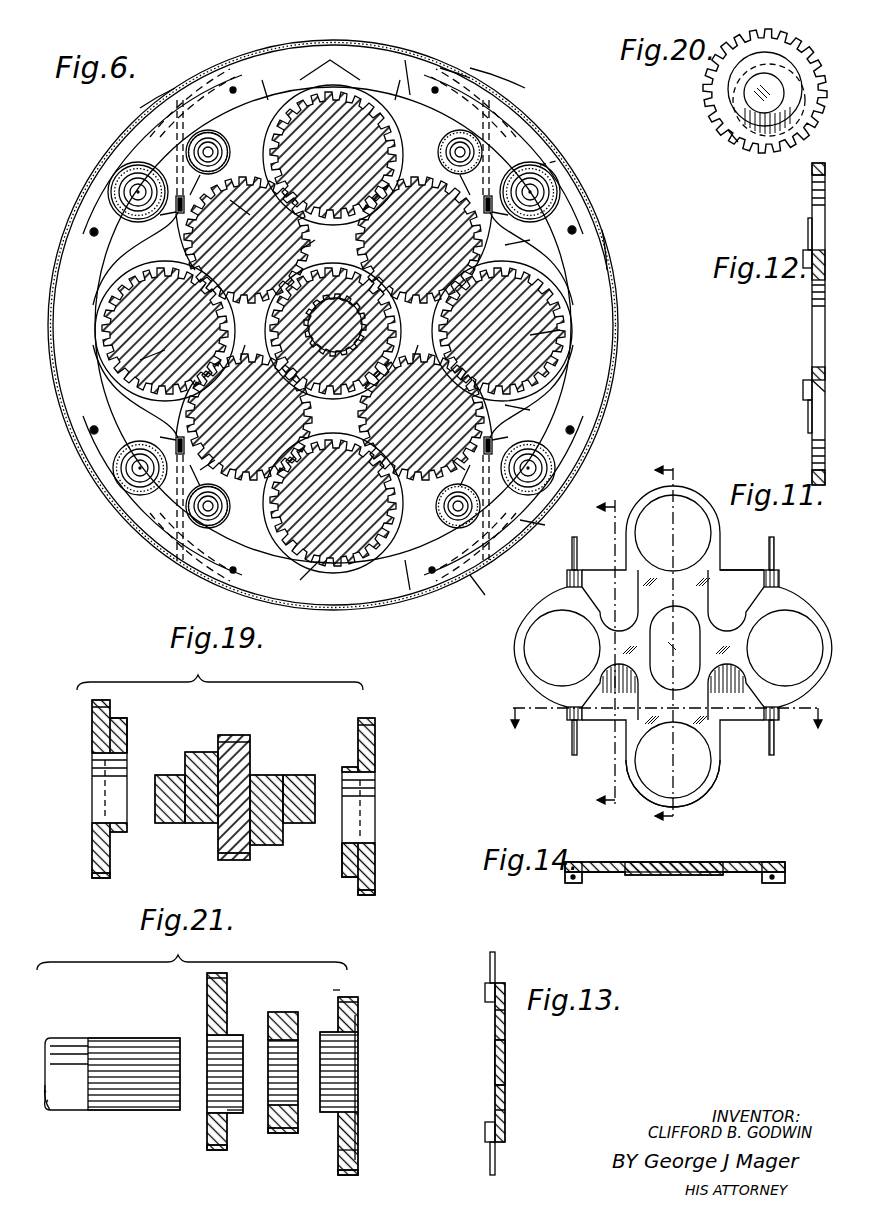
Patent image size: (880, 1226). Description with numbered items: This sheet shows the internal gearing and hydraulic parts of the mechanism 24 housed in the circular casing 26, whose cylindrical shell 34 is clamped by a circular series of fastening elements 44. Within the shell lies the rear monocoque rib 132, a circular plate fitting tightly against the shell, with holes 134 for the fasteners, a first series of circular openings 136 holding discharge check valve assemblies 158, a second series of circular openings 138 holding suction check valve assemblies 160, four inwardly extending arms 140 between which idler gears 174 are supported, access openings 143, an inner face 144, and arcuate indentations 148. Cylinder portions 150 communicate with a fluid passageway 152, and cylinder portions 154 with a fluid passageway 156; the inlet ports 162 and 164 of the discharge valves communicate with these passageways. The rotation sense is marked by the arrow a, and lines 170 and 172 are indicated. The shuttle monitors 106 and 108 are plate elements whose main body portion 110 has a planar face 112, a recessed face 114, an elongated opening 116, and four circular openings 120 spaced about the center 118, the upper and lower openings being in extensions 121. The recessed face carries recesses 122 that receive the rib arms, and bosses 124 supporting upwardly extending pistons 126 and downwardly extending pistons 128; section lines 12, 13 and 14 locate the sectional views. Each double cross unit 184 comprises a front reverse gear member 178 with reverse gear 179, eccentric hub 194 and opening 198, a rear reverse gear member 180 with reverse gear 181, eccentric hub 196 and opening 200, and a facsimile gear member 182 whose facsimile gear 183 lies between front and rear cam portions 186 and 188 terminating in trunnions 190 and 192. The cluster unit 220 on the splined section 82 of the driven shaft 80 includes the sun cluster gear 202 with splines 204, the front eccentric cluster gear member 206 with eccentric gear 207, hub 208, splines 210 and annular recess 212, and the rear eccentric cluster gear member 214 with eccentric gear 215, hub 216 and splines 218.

In FIG. 6, the mechanism 24 is at (500, 95).
In FIG. 6, the circular casing 26 is at (455, 75).
In FIG. 6, the cylindrical shell 34 is at (600, 250).
In FIG. 6, the fastening elements 44 is at (91, 233).
In FIG. 21, the driven or output shaft 80 is at (58, 1112).
In FIG. 6, the splined section 82 is at (328, 380).
In FIG. 21, the splined section 82 is at (125, 1112).
In FIG. 12, the front shuttle monitor 106 is at (800, 365).
In FIG. 14, the front shuttle monitor 106 is at (668, 890).
In FIG. 13, the front shuttle monitor 106 is at (515, 1048).
In FIG. 6, the rear shuttle monitor 108 is at (120, 470).
In FIG. 6, the main body portion 110 is at (510, 436).
In FIG. 11, the main body portion 110 is at (605, 578).
In FIG. 14, the main body portion 110 is at (676, 862).
In FIG. 13, the main body portion 110 is at (507, 1058).
In FIG. 6, the planar face 112 is at (520, 258).
In FIG. 14, the planar face 112 is at (700, 862).
In FIG. 13, the planar face 112 is at (507, 1080).
In FIG. 12, the recessed face 114 is at (803, 393).
In FIG. 11, the recessed face 114 is at (722, 569).
In FIG. 14, the recessed face 114 is at (658, 875).
In FIG. 13, the recessed face 114 is at (495, 1070).
In FIG. 6, the elongated opening 116 is at (310, 250).
In FIG. 12, the elongated opening 116 is at (815, 303).
In FIG. 11, the elongated opening 116 is at (702, 613).
In FIG. 11, the center 118 is at (683, 650).
In FIG. 12, the circular openings 120 is at (812, 190).
In FIG. 11, the circular openings 120 is at (682, 501).
In FIG. 6, the extensions 121 is at (430, 80).
In FIG. 12, the extensions 121 is at (812, 168).
In FIG. 11, the extensions 121 is at (720, 792).
In FIG. 11, the recesses 122 is at (638, 580).
In FIG. 14, the recesses 122 is at (605, 875).
In FIG. 13, the recesses 122 is at (497, 1018).
In FIG. 12, the bosses 124 is at (803, 258).
In FIG. 11, the bosses 124 is at (566, 580).
In FIG. 14, the bosses 124 is at (570, 890).
In FIG. 13, the bosses 124 is at (486, 992).
In FIG. 6, the upwardly extending pistons 126 is at (172, 225).
In FIG. 12, the upwardly extending pistons 126 is at (808, 225).
In FIG. 11, the upwardly extending pistons 126 is at (572, 564).
In FIG. 13, the upwardly extending pistons 126 is at (498, 957).
In FIG. 6, the downwardly extending pistons 128 is at (258, 470).
In FIG. 12, the downwardly extending pistons 128 is at (808, 425).
In FIG. 11, the downwardly extending pistons 128 is at (572, 750).
In FIG. 14, the downwardly extending pistons 128 is at (565, 875).
In FIG. 13, the downwardly extending pistons 128 is at (498, 1162).
In FIG. 6, the rear monocoque rib 132 is at (595, 272).
In FIG. 6, the holes 134 is at (95, 434).
In FIG. 6, the first series of circular openings 136 is at (115, 178).
In FIG. 6, the second series of circular openings 138 is at (215, 130).
In FIG. 6, the inwardly extending arms 140 is at (243, 120).
In FIG. 6, the access openings 143 is at (270, 90).
In FIG. 6, the inner faces 144 is at (100, 210).
In FIG. 6, the arcuate indentations or recesses 148 is at (340, 80).
In FIG. 6, the cylinder portions 150 is at (200, 118).
In FIG. 6, the fluid passageway 152 is at (130, 142).
In FIG. 6, the cylinder portions 154 is at (175, 548).
In FIG. 6, the fluid passageway 156 is at (165, 525).
In FIG. 6, the discharge check valve assembly 158 is at (125, 197).
In FIG. 6, the suction check valve assembly 160 is at (208, 128).
In FIG. 6, the inlet ports 162 is at (560, 158).
In FIG. 6, the inlet ports 164 is at (542, 523).
In FIG. 6, the ring portion 170 is at (522, 86).
In FIG. 6, the support 172 is at (480, 585).
In FIG. 6, the idler gear 174 is at (240, 360).
In FIG. 19, the front reverse gear member 178 is at (375, 745).
In FIG. 19, the reverse gear 179 is at (368, 897).
In FIG. 19, the rear reverse gear member 180 is at (92, 722).
In FIG. 19, the reverse gear 181 is at (100, 880).
In FIG. 6, the facsimile gear member 182 is at (365, 85).
In FIG. 20, the facsimile gear member 182 is at (726, 117).
In FIG. 19, the facsimile gear member 182 is at (232, 835).
In FIG. 6, the facsimile gear 183 is at (270, 150).
In FIG. 20, the facsimile gear 183 is at (735, 140).
In FIG. 19, the facsimile gear 183 is at (235, 860).
In FIG. 6, the double cross unit 184 is at (470, 100).
In FIG. 19, the double cross unit 184 is at (320, 730).
In FIG. 20, the front cam portion 186 is at (728, 155).
In FIG. 19, the front cam portion 186 is at (270, 777).
In FIG. 20, the rear cam portion 188 is at (745, 68).
In FIG. 19, the rear cam portion 188 is at (210, 752).
In FIG. 19, the front trunnion 190 is at (295, 777).
In FIG. 20, the rear trunnion 192 is at (752, 91).
In FIG. 19, the rear trunnion 192 is at (172, 778).
In FIG. 19, the eccentric hub 194 is at (352, 880).
In FIG. 19, the eccentric hub 196 is at (118, 718).
In FIG. 19, the circular opening 198 is at (368, 855).
In FIG. 19, the circular opening 200 is at (95, 752).
In FIG. 6, the sun cluster gear 202 is at (345, 400).
In FIG. 21, the sun cluster gear 202 is at (287, 1133).
In FIG. 6, the internal splines 204 is at (345, 252).
In FIG. 21, the internal splines 204 is at (280, 1035).
In FIG. 21, the front eccentric cluster gear member 206 is at (360, 1150).
In FIG. 21, the eccentric gear 207 is at (352, 1178).
In FIG. 21, the hub 208 is at (325, 1035).
In FIG. 21, the internal splines 210 is at (328, 1118).
In FIG. 21, the annular recess 212 is at (360, 1038).
In FIG. 21, the rear eccentric cluster gear member 214 is at (207, 1003).
In FIG. 21, the eccentric gear 215 is at (215, 1152).
In FIG. 21, the hub 216 is at (235, 1035).
In FIG. 21, the internal splines 218 is at (232, 1118).
In FIG. 21, the cluster unit 220 is at (330, 982).
In FIG. 6, the direction arrow a is at (170, 85).
In FIG. 11, the section line 12— 12 is at (681, 646).
In FIG. 11, the section line 13— 13 is at (614, 653).
In FIG. 11, the section line 14— 14 is at (668, 708).